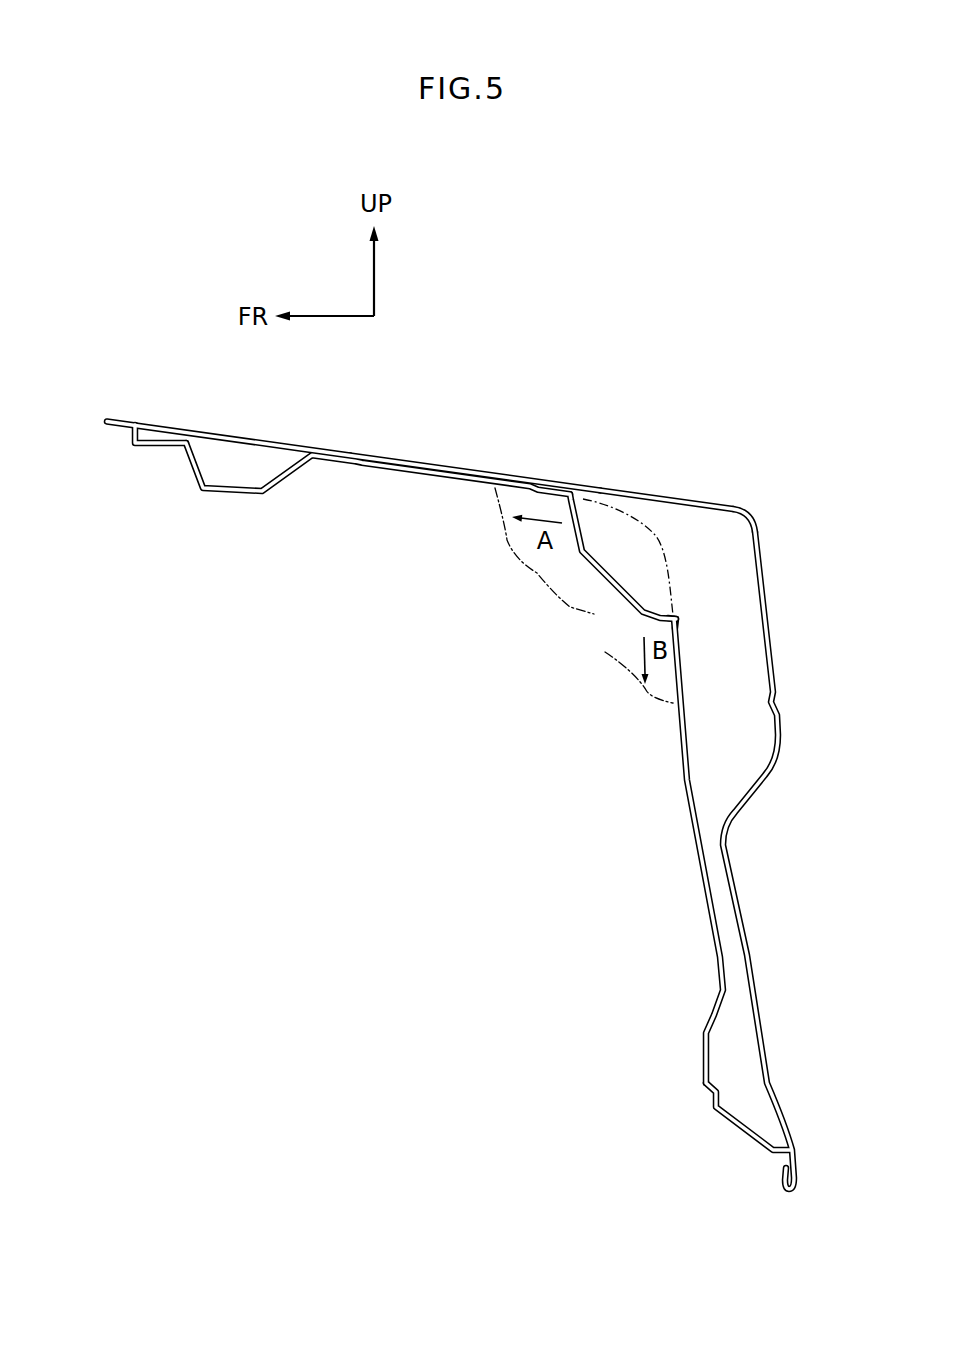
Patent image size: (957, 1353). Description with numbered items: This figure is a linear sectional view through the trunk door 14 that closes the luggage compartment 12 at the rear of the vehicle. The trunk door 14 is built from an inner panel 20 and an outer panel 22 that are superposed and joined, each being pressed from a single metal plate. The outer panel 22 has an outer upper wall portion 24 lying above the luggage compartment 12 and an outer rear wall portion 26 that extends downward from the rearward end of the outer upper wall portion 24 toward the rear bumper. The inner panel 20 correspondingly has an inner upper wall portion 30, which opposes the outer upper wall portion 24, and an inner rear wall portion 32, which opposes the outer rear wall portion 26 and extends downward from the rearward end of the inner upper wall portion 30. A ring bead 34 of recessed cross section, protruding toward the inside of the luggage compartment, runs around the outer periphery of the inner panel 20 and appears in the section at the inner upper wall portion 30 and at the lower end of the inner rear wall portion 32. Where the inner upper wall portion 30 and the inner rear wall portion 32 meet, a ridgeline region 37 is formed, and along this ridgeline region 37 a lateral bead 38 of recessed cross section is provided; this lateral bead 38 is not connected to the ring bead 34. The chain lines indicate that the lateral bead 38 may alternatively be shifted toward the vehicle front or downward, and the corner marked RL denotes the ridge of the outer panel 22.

The luggage compartment 12 is at (421, 908).
The trunk door 14 is at (467, 426).
The inner panel 20 is at (134, 446).
The outer panel 22 is at (205, 428).
The outer upper wall portion 24 is at (691, 500).
The outer rear wall portion 26 is at (760, 578).
The inner upper wall portion 30 is at (342, 466).
The inner rear wall portion 32 is at (711, 938).
The ring bead 34 is at (233, 492).
The ridgeline region 37 is at (653, 533).
The lateral bead 38 is at (527, 568).
The ridge line RL is at (748, 512).